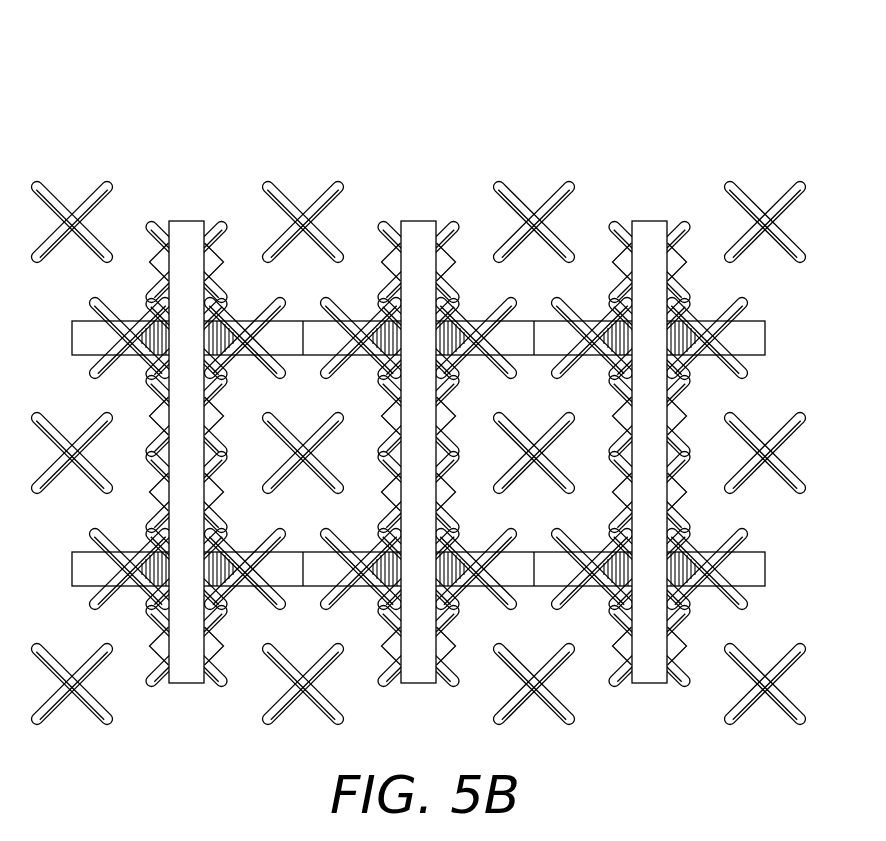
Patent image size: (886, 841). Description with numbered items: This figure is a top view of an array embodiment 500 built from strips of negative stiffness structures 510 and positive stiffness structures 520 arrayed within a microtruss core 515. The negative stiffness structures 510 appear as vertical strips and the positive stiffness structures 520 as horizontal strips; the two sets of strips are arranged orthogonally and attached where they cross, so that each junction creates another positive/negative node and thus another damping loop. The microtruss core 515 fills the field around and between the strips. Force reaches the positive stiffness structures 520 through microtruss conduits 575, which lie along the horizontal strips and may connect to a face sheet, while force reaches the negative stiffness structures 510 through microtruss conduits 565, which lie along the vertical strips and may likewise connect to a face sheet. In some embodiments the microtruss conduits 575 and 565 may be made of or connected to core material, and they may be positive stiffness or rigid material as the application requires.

The array embodiment 500 is at (435, 381).
The negative stiffness structure 510 is at (190, 676).
The microtruss core 515 is at (60, 197).
The positive stiffness structure 520 is at (752, 343).
The microtruss conduits 565 is at (151, 224).
The microtruss conduits 575 is at (102, 338).